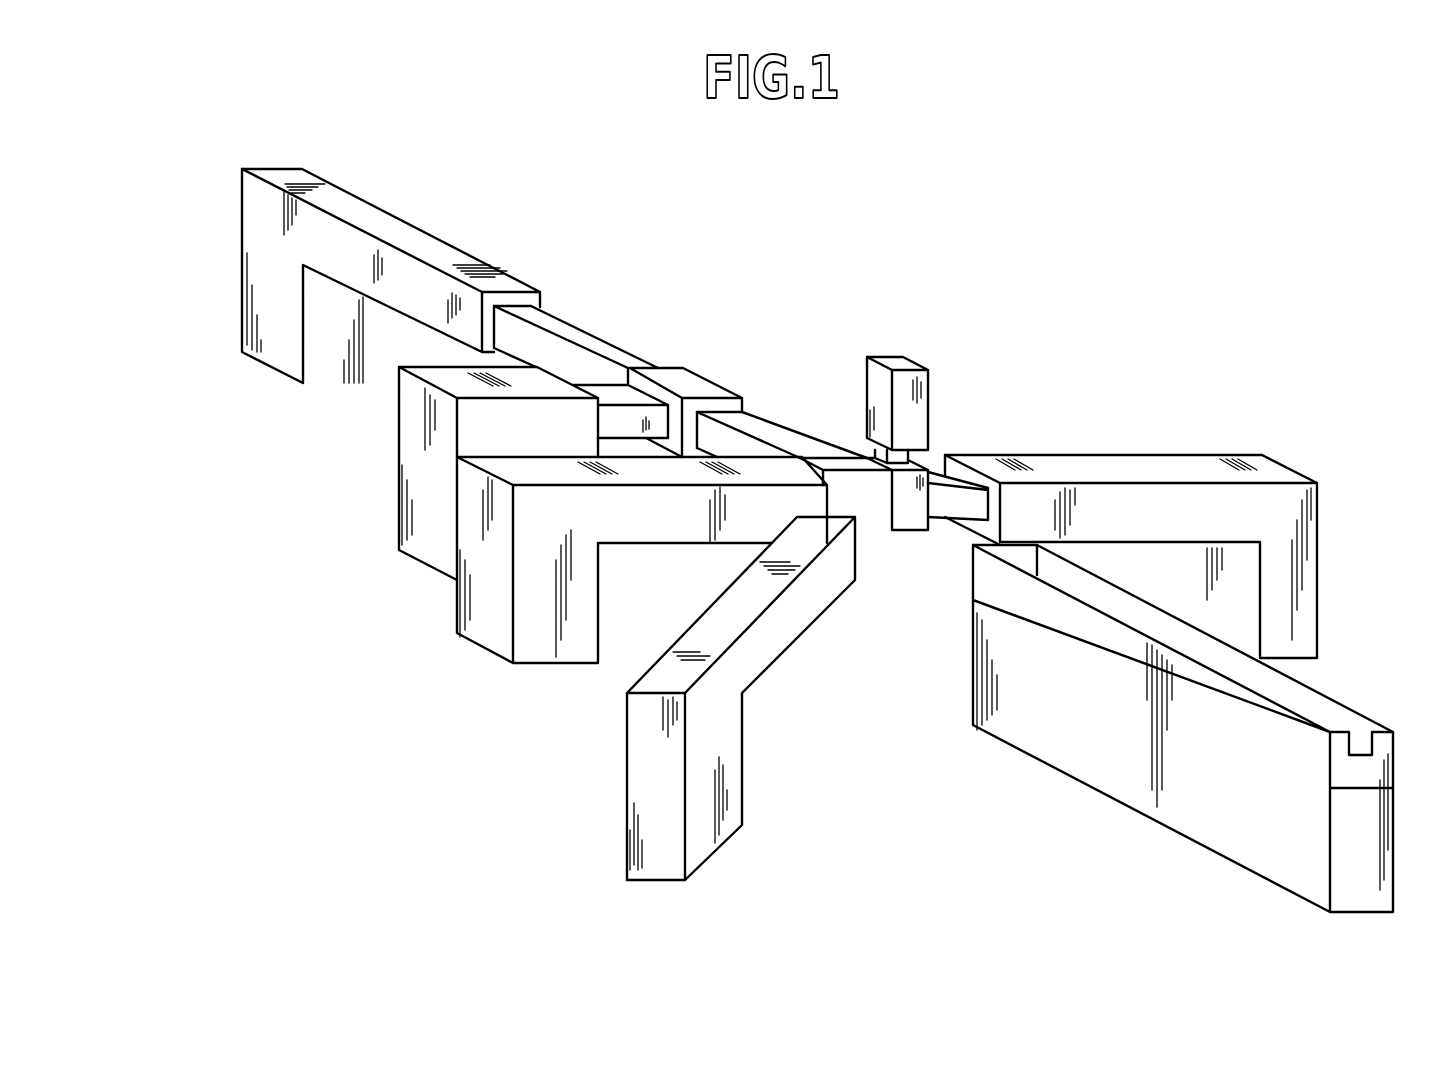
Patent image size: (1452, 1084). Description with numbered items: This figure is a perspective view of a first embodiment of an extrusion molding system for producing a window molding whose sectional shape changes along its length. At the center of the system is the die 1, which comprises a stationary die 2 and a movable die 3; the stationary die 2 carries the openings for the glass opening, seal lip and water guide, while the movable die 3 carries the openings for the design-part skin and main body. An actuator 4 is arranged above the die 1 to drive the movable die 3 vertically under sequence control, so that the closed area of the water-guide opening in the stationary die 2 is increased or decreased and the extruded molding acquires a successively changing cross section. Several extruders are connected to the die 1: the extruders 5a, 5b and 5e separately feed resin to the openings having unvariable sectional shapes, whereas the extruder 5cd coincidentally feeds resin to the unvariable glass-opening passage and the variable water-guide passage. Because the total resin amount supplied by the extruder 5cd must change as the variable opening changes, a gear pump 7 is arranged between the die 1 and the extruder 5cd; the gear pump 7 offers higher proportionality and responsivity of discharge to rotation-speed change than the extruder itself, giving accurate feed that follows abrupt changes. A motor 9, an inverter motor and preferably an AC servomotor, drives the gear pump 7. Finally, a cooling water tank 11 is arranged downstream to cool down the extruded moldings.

The die 1 is at (842, 601).
The stationary die 2 is at (848, 468).
The movable die 3 is at (906, 503).
The actuator 4 is at (916, 412).
The extruder 5a is at (650, 848).
The extruder 5b is at (480, 627).
The extruder 5cd is at (265, 295).
The extruder 5e is at (1302, 633).
The gear pump 7 is at (683, 378).
The motor 9 is at (412, 517).
The cooling water tank 11 is at (1175, 807).